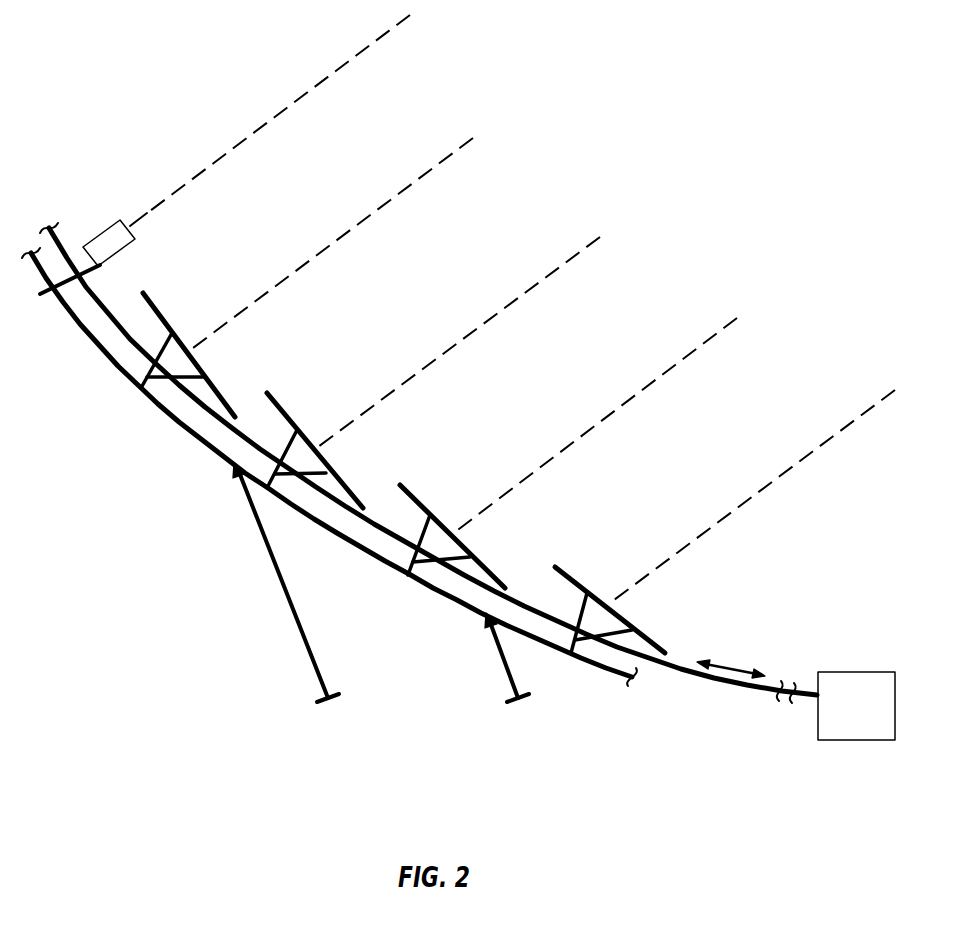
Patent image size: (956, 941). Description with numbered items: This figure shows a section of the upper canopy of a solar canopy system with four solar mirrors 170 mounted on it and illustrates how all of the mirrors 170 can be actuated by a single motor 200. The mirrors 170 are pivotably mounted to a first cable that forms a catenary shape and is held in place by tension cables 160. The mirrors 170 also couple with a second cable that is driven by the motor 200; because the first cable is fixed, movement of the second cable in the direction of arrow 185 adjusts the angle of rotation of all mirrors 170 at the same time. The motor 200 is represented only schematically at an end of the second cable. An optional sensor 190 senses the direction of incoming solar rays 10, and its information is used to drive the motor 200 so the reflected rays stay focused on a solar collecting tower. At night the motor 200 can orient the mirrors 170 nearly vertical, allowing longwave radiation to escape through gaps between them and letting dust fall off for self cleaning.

The solar rays 10 is at (335, 72).
The tension cables 160 is at (323, 670).
The solar mirrors 170 is at (438, 506).
The arrow 185 is at (728, 667).
The sensor 190 is at (105, 225).
The motor 200 is at (856, 706).